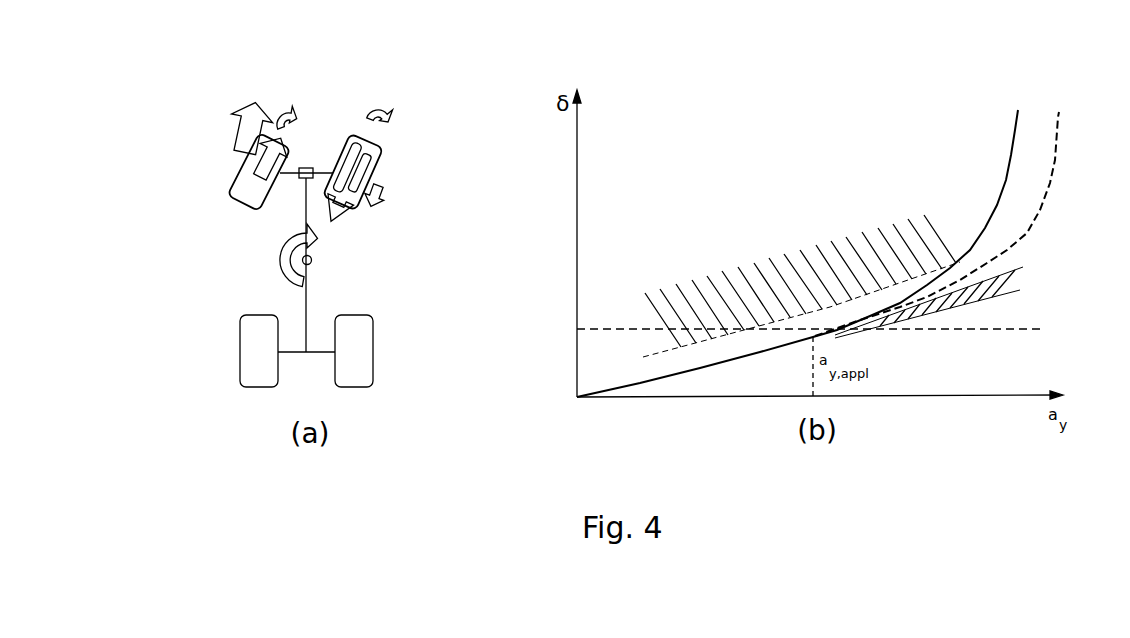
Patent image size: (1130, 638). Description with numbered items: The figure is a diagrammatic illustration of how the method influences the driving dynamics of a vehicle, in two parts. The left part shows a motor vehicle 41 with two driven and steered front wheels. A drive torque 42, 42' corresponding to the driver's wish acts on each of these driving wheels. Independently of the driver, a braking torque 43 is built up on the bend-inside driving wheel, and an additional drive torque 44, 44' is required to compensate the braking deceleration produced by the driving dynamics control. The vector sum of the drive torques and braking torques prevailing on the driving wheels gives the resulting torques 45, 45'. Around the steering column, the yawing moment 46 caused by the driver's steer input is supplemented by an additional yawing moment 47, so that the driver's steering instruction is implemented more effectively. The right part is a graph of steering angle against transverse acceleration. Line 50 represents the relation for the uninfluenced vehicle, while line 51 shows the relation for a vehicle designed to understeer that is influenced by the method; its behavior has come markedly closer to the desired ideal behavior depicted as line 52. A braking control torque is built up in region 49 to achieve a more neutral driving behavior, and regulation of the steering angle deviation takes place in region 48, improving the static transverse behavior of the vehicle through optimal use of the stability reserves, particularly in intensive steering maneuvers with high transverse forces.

The motor vehicle 41 is at (232, 243).
The drive torque 42 is at (293, 152).
The drive torque 42' is at (394, 167).
The braking torque 43 is at (343, 217).
The additional drive torque 44 is at (302, 94).
The additional drive torque 44' is at (409, 101).
The resulting torque 45 is at (215, 129).
The resulting torque 45' is at (412, 190).
The yawing moment 46 is at (310, 275).
The additional yawing moment 47 is at (323, 233).
The region 48 is at (827, 263).
The region 49 is at (1013, 282).
The line 50 is at (1013, 123).
The line 51 is at (1060, 125).
The line 52 is at (1017, 290).